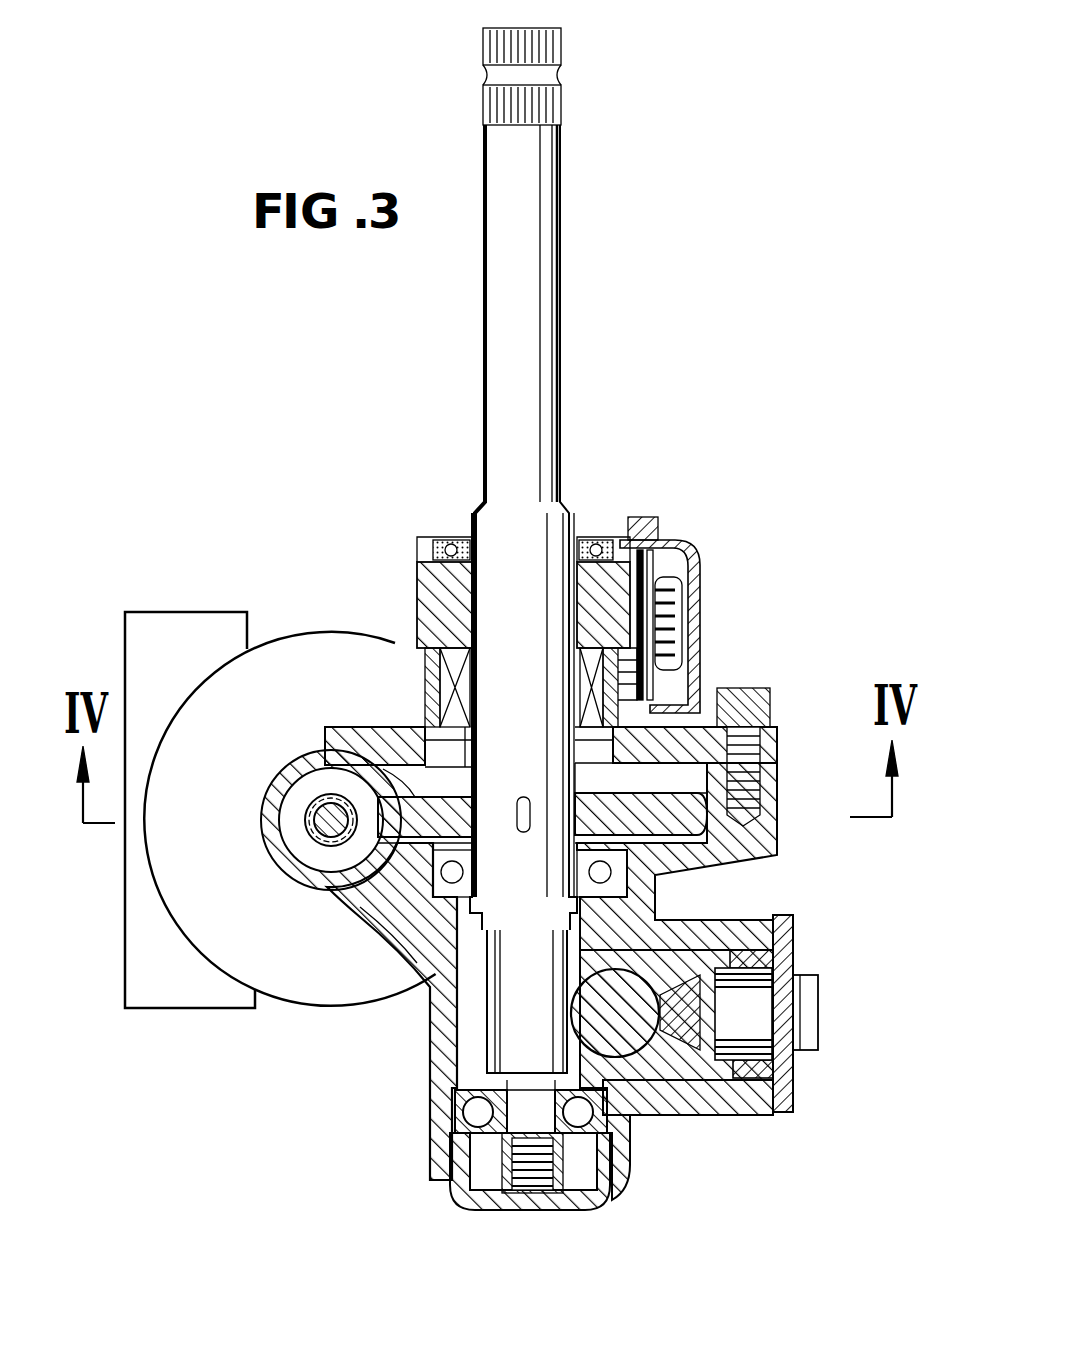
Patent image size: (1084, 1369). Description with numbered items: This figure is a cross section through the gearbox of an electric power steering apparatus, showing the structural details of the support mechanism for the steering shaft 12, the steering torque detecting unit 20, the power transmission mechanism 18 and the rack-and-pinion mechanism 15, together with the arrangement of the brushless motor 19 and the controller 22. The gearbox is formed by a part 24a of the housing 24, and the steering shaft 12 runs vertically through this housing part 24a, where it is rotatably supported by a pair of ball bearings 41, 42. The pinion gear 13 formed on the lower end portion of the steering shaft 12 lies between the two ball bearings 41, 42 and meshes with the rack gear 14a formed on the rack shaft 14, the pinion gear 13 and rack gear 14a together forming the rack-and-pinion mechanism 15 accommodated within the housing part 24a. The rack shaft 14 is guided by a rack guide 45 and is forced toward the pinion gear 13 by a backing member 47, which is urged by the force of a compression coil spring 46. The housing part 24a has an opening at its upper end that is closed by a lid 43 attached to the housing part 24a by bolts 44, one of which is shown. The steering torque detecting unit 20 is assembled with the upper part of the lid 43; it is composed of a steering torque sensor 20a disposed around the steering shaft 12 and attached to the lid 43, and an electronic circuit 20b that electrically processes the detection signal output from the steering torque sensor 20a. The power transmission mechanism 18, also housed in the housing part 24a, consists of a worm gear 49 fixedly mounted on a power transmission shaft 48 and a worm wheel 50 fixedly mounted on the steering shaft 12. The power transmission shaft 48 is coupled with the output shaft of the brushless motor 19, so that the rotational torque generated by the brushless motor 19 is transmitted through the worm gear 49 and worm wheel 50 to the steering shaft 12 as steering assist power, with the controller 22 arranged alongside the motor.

The steering shaft 12 is at (548, 287).
The pinion gear 13 is at (466, 1105).
The rack shaft 14 is at (747, 1114).
The rack gear 14a is at (697, 1115).
The rack-and-pinion mechanism 15 is at (500, 1012).
The power transmission mechanism 18 is at (317, 890).
The brushless motor 19 is at (300, 668).
The steering torque detecting unit 20 is at (595, 592).
The steering torque sensor 20a is at (430, 665).
The electronic circuit 20b is at (670, 615).
The controller 22 is at (178, 625).
The housing 24 is at (810, 927).
The housing part 24a is at (778, 837).
The ball bearing 41 is at (358, 918).
The ball bearing 42 is at (627, 1135).
The lid 43 is at (693, 727).
The bolt 44 is at (757, 688).
The rack guide 45 is at (795, 1073).
The compression coil spring 46 is at (797, 963).
The backing member 47 is at (652, 975).
The power transmission shaft 48 is at (290, 845).
The worm gear 49 is at (308, 800).
The worm wheel 50 is at (360, 727).